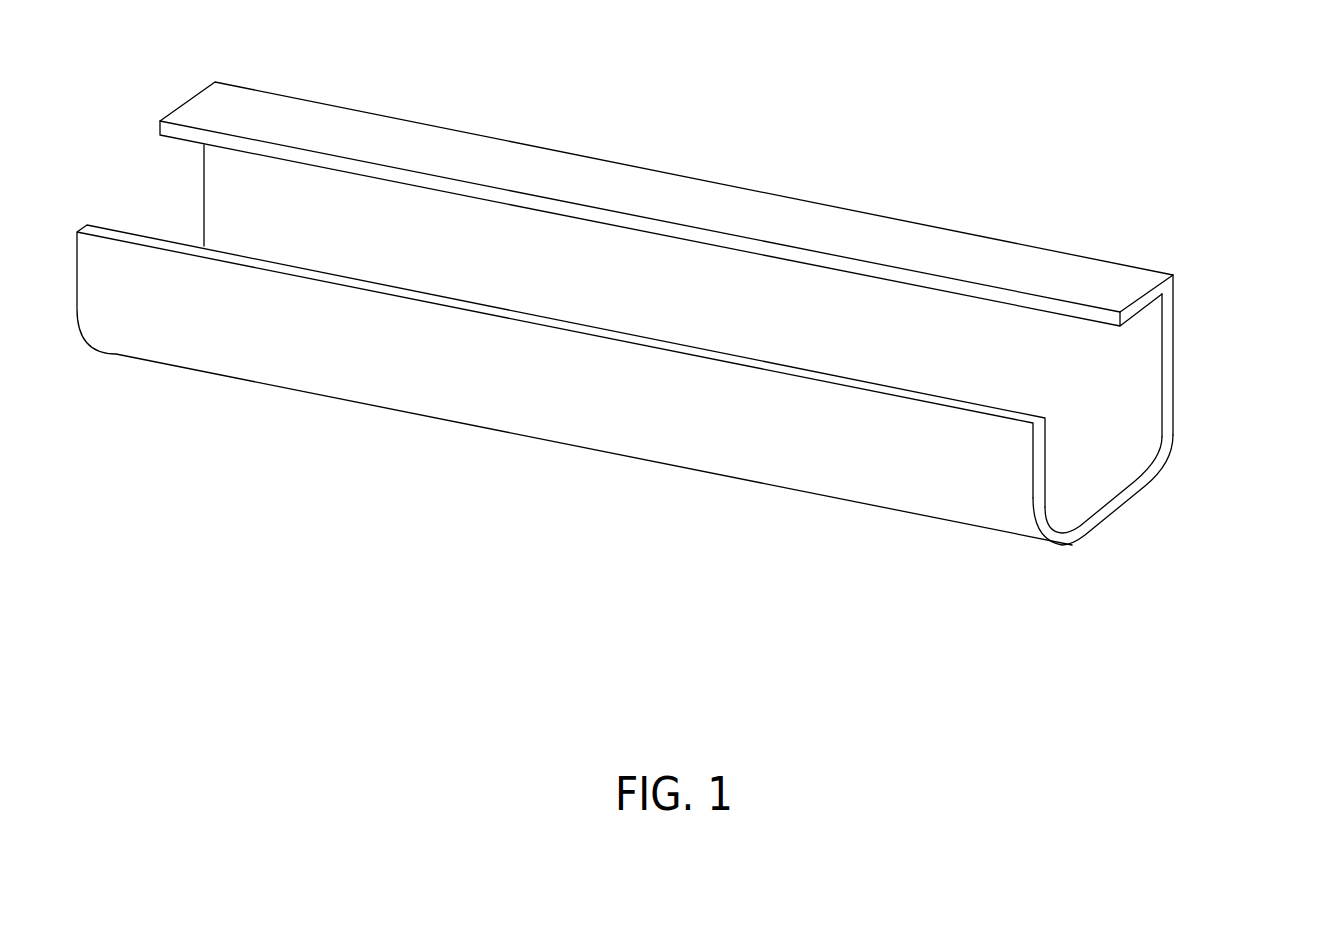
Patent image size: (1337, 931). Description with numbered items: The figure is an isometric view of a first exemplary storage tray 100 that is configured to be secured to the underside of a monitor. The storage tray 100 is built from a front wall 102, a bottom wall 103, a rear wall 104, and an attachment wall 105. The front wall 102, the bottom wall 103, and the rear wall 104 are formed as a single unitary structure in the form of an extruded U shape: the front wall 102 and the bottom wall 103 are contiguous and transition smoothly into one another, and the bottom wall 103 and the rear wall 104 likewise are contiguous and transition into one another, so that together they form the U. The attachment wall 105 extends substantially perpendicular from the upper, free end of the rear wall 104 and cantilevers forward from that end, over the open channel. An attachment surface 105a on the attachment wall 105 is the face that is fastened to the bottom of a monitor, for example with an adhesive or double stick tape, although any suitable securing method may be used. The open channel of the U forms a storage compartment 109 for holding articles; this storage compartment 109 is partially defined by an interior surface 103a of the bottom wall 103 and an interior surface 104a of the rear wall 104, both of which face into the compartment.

The storage tray 100 is at (695, 330).
The front wall 102 is at (548, 395).
The bottom wall 103 is at (1169, 519).
The interior surface of the bottom wall 103a is at (1086, 468).
The rear wall 104 is at (748, 291).
The interior surface of the rear wall 104a is at (1122, 376).
The attachment wall 105 is at (666, 202).
The attachment surface 105a is at (592, 178).
The storage compartment 109 is at (344, 254).